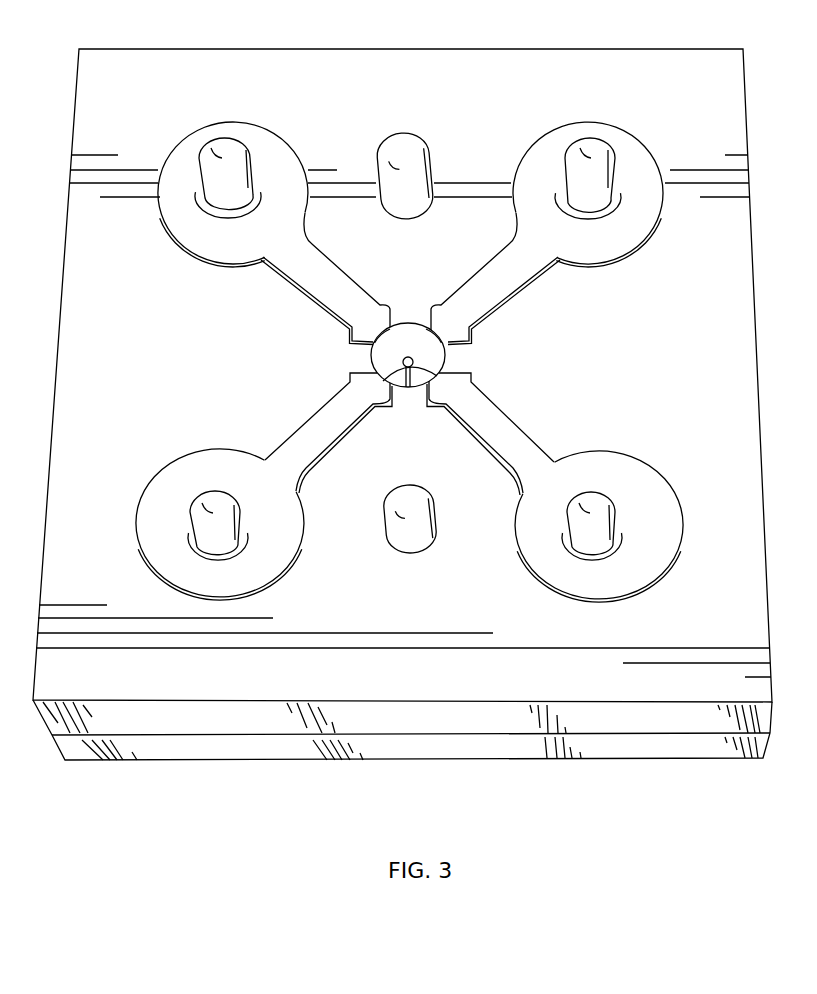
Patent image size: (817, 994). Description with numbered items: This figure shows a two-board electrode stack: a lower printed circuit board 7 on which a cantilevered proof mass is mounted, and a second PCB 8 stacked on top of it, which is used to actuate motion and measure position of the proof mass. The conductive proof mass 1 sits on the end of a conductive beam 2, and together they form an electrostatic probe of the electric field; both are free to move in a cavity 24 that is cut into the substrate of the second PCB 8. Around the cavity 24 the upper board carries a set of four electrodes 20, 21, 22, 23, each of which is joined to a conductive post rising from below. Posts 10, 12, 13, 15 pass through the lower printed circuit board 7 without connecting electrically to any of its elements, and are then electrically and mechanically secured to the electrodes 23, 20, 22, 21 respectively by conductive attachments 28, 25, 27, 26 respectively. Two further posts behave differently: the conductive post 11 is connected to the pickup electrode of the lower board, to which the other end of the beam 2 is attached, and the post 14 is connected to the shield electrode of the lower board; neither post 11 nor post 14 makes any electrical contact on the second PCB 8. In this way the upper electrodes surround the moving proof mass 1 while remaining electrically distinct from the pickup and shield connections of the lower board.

The proof mass 1 is at (404, 362).
The beam 2 is at (413, 380).
The printed circuit board 7 is at (775, 736).
The second PCB 8 is at (775, 703).
The post 10 is at (203, 507).
The conductive post 11 is at (405, 500).
The post 12 is at (590, 500).
The post 13 is at (210, 148).
The post 14 is at (393, 148).
The post 15 is at (585, 148).
The electrode 20 is at (580, 467).
The electrode 21 is at (617, 230).
The electrode 22 is at (188, 227).
The electrode 23 is at (245, 470).
The cavity 24 is at (398, 340).
The conductive attachment 25 is at (623, 537).
The conductive attachment 26 is at (615, 198).
The conductive attachment 27 is at (233, 213).
The conductive attachment 28 is at (193, 542).